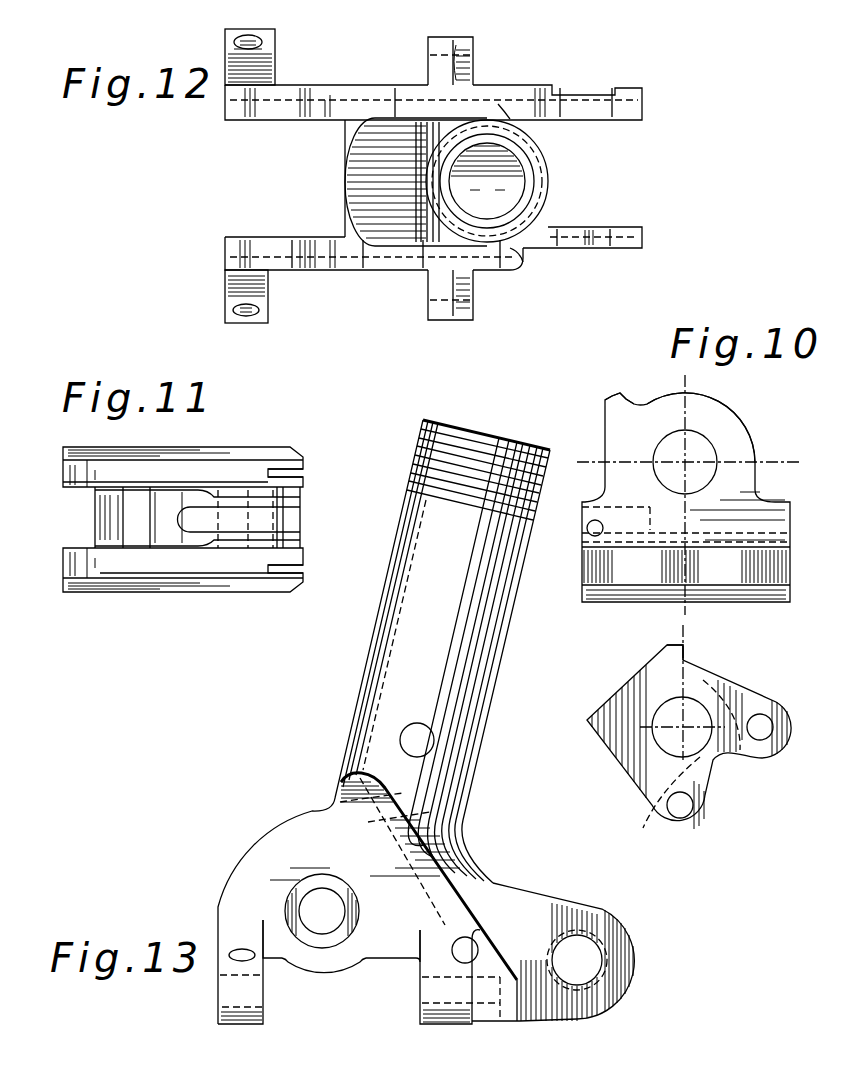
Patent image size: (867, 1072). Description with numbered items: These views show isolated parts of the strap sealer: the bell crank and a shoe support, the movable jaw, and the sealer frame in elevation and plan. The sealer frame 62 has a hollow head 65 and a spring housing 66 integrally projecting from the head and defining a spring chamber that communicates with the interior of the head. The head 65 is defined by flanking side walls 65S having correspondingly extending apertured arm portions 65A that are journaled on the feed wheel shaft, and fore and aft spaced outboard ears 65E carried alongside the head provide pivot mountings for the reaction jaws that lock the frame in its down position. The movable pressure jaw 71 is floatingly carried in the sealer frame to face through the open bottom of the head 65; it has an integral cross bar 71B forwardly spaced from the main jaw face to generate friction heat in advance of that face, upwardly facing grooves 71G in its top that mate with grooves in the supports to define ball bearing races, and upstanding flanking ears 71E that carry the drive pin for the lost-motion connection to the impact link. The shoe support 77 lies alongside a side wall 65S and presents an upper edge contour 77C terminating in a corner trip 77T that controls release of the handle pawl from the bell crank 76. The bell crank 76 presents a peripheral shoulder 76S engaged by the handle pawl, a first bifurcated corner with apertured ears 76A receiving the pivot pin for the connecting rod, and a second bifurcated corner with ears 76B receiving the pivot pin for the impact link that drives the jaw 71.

In FIG. 12, the sealer frame 62 is at (340, 210).
In FIG. 13, the sealer frame 62 is at (476, 817).
In FIG. 12, the hollow head 65 is at (273, 76).
In FIG. 13, the hollow head 65 is at (236, 853).
In FIG. 12, the apertured arm portions 65A is at (615, 243).
In FIG. 13, the apertured arm portions 65A is at (547, 910).
In FIG. 12, the outboard ears 65E is at (470, 62).
In FIG. 13, the outboard ears 65E is at (220, 1025).
In FIG. 13, the side walls 65S is at (392, 948).
In FIG. 12, the spring housing 66 is at (543, 175).
In FIG. 13, the spring housing 66 is at (510, 641).
In FIG. 11, the movable pressure jaw 71 is at (177, 452).
In FIG. 11, the cross bar 71B is at (103, 507).
In FIG. 11, the flanking ears 71E is at (240, 515).
In FIG. 11, the grooves 71G is at (220, 480).
In FIG. 10, the bell crank 76 is at (632, 732).
In FIG. 10, the ears 76A is at (737, 694).
In FIG. 10, the ears 76B is at (655, 813).
In FIG. 10, the peripheral shoulder 76S is at (688, 655).
In FIG. 10, the shoe support 77 is at (674, 429).
In FIG. 10, the upper edge contour 77C is at (676, 395).
In FIG. 10, the corner trip 77T is at (626, 397).